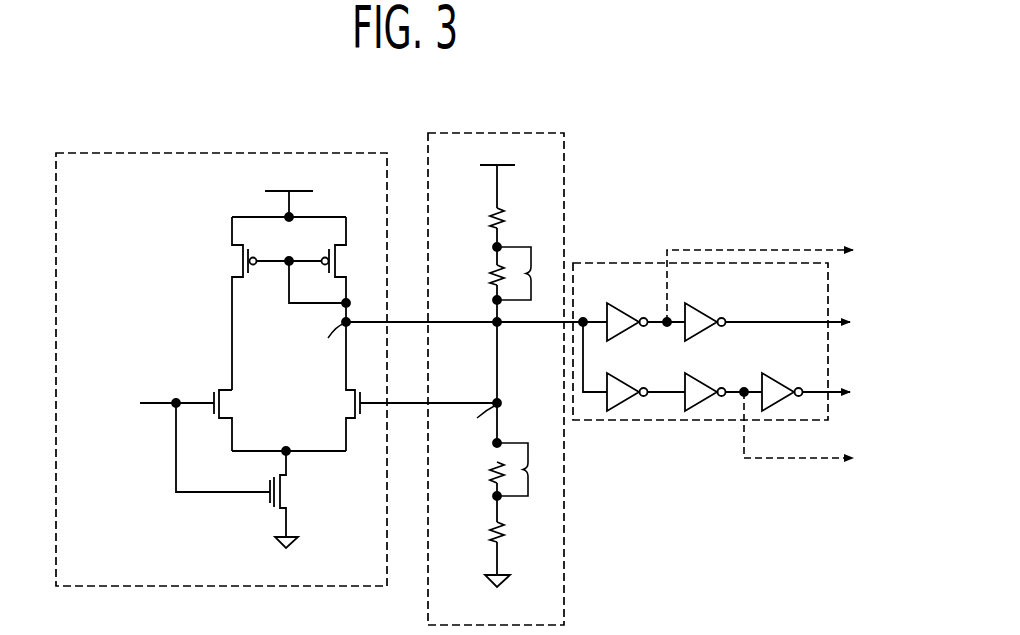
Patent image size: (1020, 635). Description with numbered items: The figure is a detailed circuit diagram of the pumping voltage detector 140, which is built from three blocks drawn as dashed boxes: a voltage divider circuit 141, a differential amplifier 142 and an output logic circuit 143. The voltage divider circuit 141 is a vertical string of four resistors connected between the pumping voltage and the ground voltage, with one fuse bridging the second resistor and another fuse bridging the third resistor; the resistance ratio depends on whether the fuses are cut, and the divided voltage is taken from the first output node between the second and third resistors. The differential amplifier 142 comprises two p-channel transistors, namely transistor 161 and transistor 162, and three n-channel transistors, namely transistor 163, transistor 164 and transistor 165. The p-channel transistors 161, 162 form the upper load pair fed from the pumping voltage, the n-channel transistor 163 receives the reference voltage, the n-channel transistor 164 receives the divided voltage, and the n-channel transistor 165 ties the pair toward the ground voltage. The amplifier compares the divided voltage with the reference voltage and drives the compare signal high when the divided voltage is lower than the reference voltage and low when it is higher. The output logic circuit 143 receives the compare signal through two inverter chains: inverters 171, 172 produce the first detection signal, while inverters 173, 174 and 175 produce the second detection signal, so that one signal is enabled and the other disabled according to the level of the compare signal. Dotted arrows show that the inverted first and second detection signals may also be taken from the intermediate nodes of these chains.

The VPP voltage detector 140 is at (674, 114).
The voltage divider circuit 141 is at (566, 152).
The differential amplifier 142 is at (222, 153).
The output logic circuit 143 is at (828, 292).
The PMOS transistor 161 is at (226, 303).
The PMOS transistor 162 is at (350, 269).
The NMOS transistor 163 is at (237, 420).
The NMOS transistor 164 is at (336, 386).
The NMOS transistor 165 is at (296, 494).
The inverter 171 is at (626, 308).
The inverter 172 is at (704, 308).
The inverter 173 is at (626, 378).
The inverter 174 is at (704, 378).
The inverter 175 is at (781, 378).